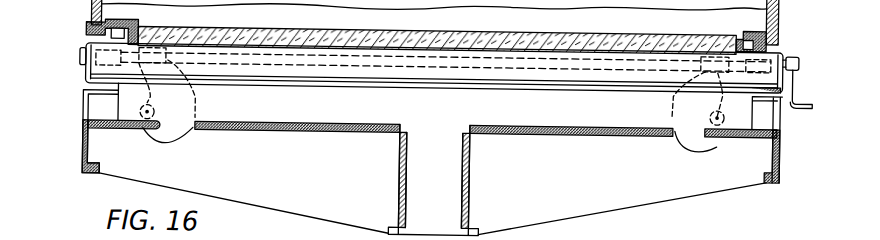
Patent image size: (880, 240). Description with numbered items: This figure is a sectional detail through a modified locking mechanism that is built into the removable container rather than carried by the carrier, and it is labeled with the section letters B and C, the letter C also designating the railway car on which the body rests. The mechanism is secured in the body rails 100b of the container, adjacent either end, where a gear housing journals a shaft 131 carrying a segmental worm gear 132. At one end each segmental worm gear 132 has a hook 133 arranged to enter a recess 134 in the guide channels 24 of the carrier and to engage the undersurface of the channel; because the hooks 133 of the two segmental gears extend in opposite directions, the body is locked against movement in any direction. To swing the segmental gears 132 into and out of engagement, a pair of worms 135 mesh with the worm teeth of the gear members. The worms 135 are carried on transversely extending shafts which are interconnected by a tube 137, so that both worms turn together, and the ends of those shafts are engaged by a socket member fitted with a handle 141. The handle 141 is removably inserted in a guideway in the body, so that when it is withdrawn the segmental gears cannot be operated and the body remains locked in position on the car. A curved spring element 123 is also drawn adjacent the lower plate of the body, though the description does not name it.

The body rails 100b is at (431, 81).
The tube 137 is at (495, 62).
The worms 135 is at (153, 57).
The segmental worm gear 132 is at (198, 106).
The guide channels 24 is at (100, 112).
The shaft 131 is at (140, 128).
The spring clip 123 is at (148, 138).
The hook 133 is at (718, 144).
The recess 134 is at (195, 136).
The handle 141 is at (793, 72).
The section B is at (90, 9).
The railway car C is at (85, 147).